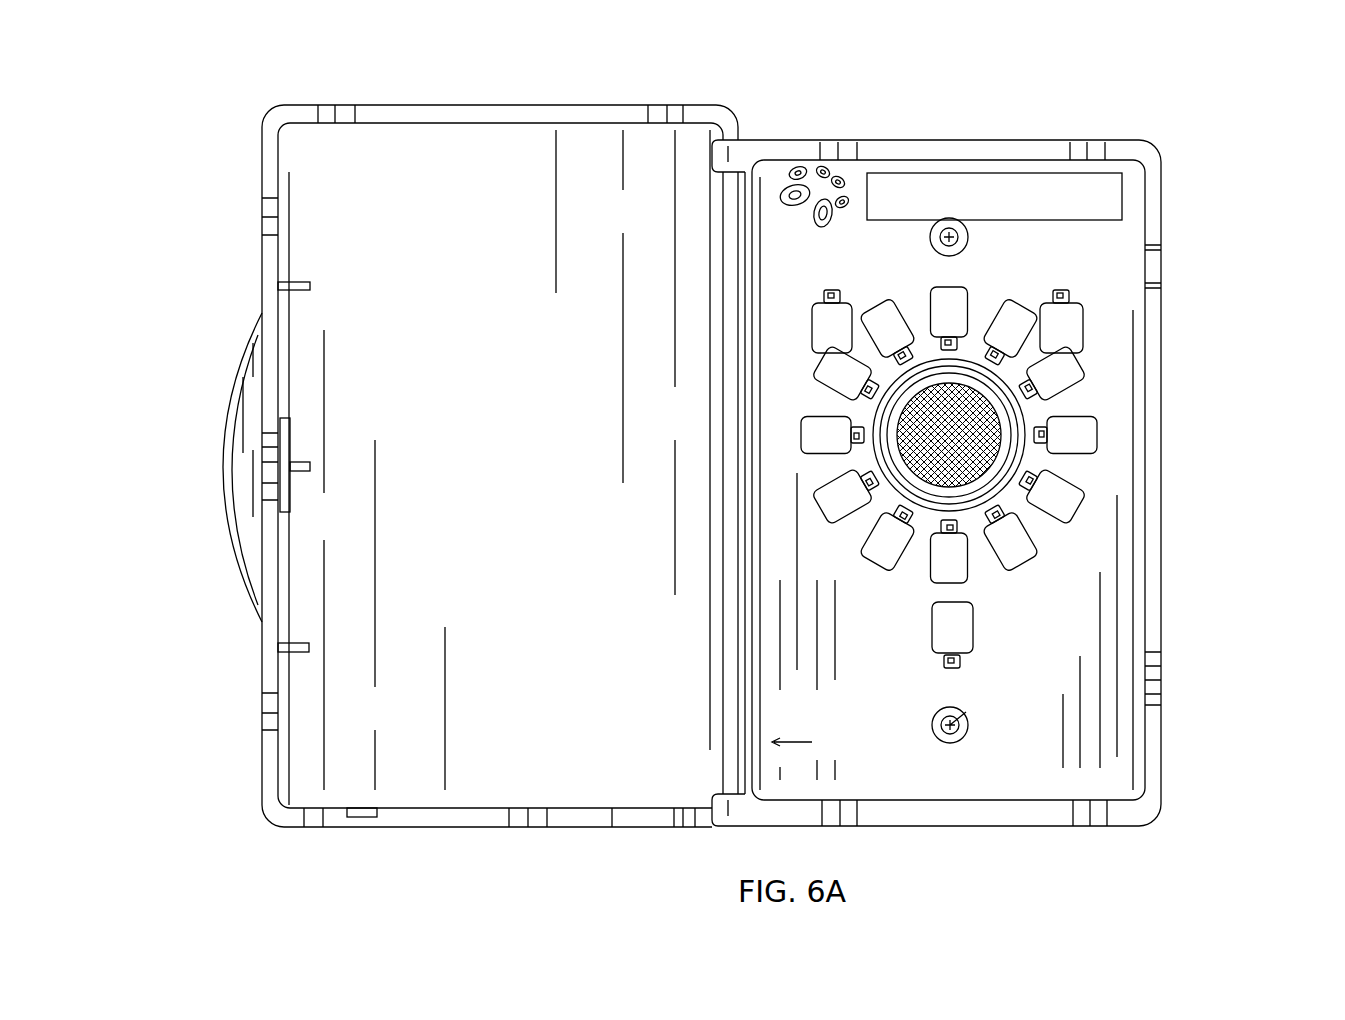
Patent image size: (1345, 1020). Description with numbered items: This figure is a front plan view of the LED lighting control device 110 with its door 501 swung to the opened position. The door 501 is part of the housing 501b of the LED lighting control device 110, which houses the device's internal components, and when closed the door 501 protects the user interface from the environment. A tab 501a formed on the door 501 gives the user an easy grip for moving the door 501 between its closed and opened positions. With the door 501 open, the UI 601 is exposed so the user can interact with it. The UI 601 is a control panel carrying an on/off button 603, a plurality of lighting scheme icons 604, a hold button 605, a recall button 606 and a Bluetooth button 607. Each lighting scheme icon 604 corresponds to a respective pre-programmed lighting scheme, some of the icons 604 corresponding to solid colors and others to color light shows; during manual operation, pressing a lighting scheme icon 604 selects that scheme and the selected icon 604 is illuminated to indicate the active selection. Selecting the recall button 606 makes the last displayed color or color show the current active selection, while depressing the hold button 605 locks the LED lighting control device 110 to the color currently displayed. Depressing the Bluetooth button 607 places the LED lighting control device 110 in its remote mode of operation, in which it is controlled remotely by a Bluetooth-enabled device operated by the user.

The LED lighting control device 110 is at (1124, 117).
The door 501 is at (498, 116).
The tab 501a is at (240, 392).
The housing 501b is at (953, 141).
The user interface 601 is at (1063, 610).
The on/off button 603 is at (987, 422).
The lighting scheme icons 604 is at (1020, 300).
The hold button 605 is at (828, 316).
The recall button 606 is at (1073, 317).
The Bluetooth button 607 is at (960, 648).